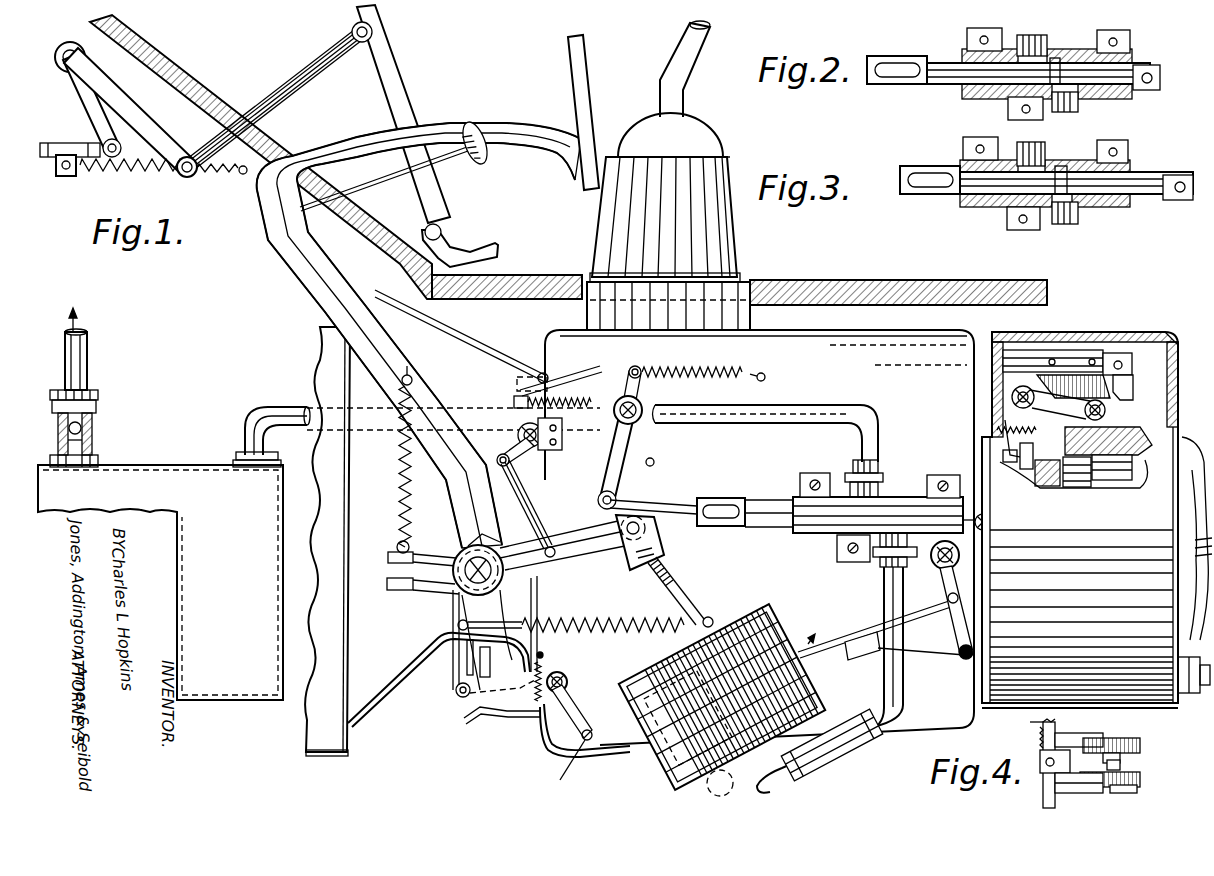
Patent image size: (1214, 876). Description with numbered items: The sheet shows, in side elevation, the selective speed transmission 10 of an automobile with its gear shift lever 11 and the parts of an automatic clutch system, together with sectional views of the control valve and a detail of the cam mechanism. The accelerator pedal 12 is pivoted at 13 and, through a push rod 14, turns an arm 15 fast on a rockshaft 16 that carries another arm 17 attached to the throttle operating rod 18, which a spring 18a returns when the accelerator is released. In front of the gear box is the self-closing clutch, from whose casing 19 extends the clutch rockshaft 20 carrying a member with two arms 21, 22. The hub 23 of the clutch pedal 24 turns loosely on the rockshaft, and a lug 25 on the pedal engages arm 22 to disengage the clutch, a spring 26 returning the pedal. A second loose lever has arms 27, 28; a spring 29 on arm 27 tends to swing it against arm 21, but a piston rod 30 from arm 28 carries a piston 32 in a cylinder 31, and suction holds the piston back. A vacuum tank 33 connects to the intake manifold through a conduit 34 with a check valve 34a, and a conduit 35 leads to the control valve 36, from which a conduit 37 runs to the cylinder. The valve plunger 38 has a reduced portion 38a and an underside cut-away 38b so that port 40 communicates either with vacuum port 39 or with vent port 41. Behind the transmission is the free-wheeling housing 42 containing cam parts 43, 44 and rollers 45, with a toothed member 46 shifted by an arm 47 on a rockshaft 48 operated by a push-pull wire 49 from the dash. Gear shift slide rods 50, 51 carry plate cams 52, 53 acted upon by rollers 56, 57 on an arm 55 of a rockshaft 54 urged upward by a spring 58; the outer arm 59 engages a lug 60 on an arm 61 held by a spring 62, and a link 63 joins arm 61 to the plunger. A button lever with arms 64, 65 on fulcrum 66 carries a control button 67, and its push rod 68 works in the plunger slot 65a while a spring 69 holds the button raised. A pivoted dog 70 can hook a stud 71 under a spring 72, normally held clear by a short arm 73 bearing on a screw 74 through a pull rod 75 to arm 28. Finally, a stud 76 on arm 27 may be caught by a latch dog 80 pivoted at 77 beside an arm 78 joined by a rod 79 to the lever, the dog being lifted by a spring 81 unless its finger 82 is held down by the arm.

In FIG. 1, the selective speed transmission 10 is at (798, 402).
In FIG. 1, the gear shift lever 11 is at (667, 52).
In FIG. 1, the accelerator pedal 12 is at (392, 68).
In FIG. 1, the pivot 13 is at (443, 226).
In FIG. 1, the push rod 14 is at (298, 83).
In FIG. 1, the arm 15 is at (150, 122).
In FIG. 1, the rockshaft 16 is at (67, 48).
In FIG. 1, the arm 17 is at (68, 110).
In FIG. 1, the throttle operating rod 18 is at (82, 176).
In FIG. 1, the spring 18a is at (163, 176).
In FIG. 1, the clutch casing 19 is at (380, 676).
In FIG. 1, the clutch rockshaft 20 is at (456, 556).
In FIG. 1, the arm 21 is at (490, 662).
In FIG. 1, the arm 22 is at (388, 584).
In FIG. 1, the hub 23 is at (492, 538).
In FIG. 1, the clutch pedal 24 is at (300, 265).
In FIG. 1, the arm or lug 25 is at (390, 556).
In FIG. 1, the spring 26 is at (402, 505).
In FIG. 1, the arm 27 is at (456, 672).
In FIG. 1, the arm 28 is at (571, 551).
In FIG. 1, the spring 29 is at (600, 622).
In FIG. 1, the piston rod 30 is at (682, 602).
In FIG. 1, the cylinder 31 is at (652, 760).
In FIG. 1, the piston 32 is at (720, 783).
In FIG. 1, the vacuum tank 33 is at (146, 470).
In FIG. 1, the conduit 34 is at (88, 358).
In FIG. 1, the check valve 34a is at (93, 430).
In FIG. 1, the conduit 35 is at (272, 410).
In FIG. 1, the control valve 36 is at (890, 508).
In FIG. 2, the control valve 36 is at (968, 94).
In FIG. 3, the control valve 36 is at (978, 207).
In FIG. 1, the conduit 37 is at (900, 690).
In FIG. 1, the valve plunger 38 is at (768, 503).
In FIG. 2, the valve plunger 38 is at (940, 62).
In FIG. 3, the valve plunger 38 is at (930, 172).
In FIG. 2, the reduced diameter portion 38a is at (1010, 99).
In FIG. 3, the reduced diameter portion 38a is at (1038, 209).
In FIG. 2, the cut-away 38b is at (1050, 97).
In FIG. 3, the cut-away 38b is at (1088, 197).
In FIG. 1, the port 39 is at (864, 478).
In FIG. 2, the port 39 is at (1040, 43).
In FIG. 3, the port 39 is at (1040, 152).
In FIG. 1, the port 40 is at (895, 550).
In FIG. 2, the port 40 is at (1075, 110).
In FIG. 3, the port 40 is at (1072, 220).
In FIG. 2, the vent port 41 is at (1060, 62).
In FIG. 3, the vent port 41 is at (1062, 170).
In FIG. 1, the free-wheeling unit housing 42 is at (1178, 400).
In FIG. 1, the cam part 43 is at (1100, 485).
In FIG. 1, the cam part 44 is at (1140, 450).
In FIG. 1, the rollers 45 is at (1130, 470).
In FIG. 1, the positive clutch member 46 is at (1050, 486).
In FIG. 1, the arm 47 is at (945, 610).
In FIG. 1, the rockshaft 48 is at (943, 597).
In FIG. 1, the push-pull wire 49 is at (958, 654).
In FIG. 1, the slide rod 50 is at (1133, 367).
In FIG. 4, the slide rod 50 is at (1072, 735).
In FIG. 1, the slide rod 51 is at (1078, 358).
In FIG. 4, the slide rod 51 is at (1075, 790).
In FIG. 1, the plate cam 52 is at (1131, 396).
In FIG. 4, the plate cam 52 is at (1118, 740).
In FIG. 1, the plate cam 53 is at (1050, 378).
In FIG. 4, the plate cam 53 is at (1123, 798).
In FIG. 1, the rockshaft 54 is at (1010, 402).
In FIG. 1, the arm 55 is at (1060, 409).
In FIG. 4, the arm 55 is at (1122, 765).
In FIG. 4, the roller 56 is at (1122, 756).
In FIG. 1, the roller 57 is at (1106, 410).
In FIG. 4, the roller 57 is at (1140, 782).
In FIG. 1, the spring 58 is at (1031, 428).
In FIG. 4, the spring 58 is at (1030, 722).
In FIG. 1, the arm 59 is at (1005, 430).
In FIG. 4, the arm 59 is at (1043, 797).
In FIG. 1, the lug 60 is at (1034, 448).
In FIG. 1, the arm 61 is at (1018, 498).
In FIG. 1, the spring 62 is at (1003, 445).
In FIG. 1, the link 63 is at (1002, 531).
In FIG. 1, the arm 64 is at (483, 354).
In FIG. 1, the arm 65 is at (632, 458).
In FIG. 2, the slot 65a is at (905, 82).
In FIG. 3, the slot 65a is at (940, 190).
In FIG. 1, the fulcrum 66 is at (645, 413).
In FIG. 1, the control button 67 is at (484, 158).
In FIG. 1, the push rod 68 is at (654, 510).
In FIG. 1, the spring 69 is at (690, 370).
In FIG. 1, the pivoted dog 70 is at (513, 393).
In FIG. 1, the stud 71 is at (560, 378).
In FIG. 1, the spring 72 is at (582, 398).
In FIG. 1, the short arm 73 is at (516, 438).
In FIG. 1, the screw 74 is at (560, 452).
In FIG. 1, the pull rod 75 is at (531, 502).
In FIG. 1, the stud 76 is at (460, 696).
In FIG. 1, the pivot 77 is at (566, 673).
In FIG. 1, the arm 78 is at (578, 698).
In FIG. 1, the rod 79 is at (581, 760).
In FIG. 1, the latch member or dog 80 is at (502, 705).
In FIG. 1, the spring 81 is at (544, 662).
In FIG. 1, the finger 82 is at (592, 710).